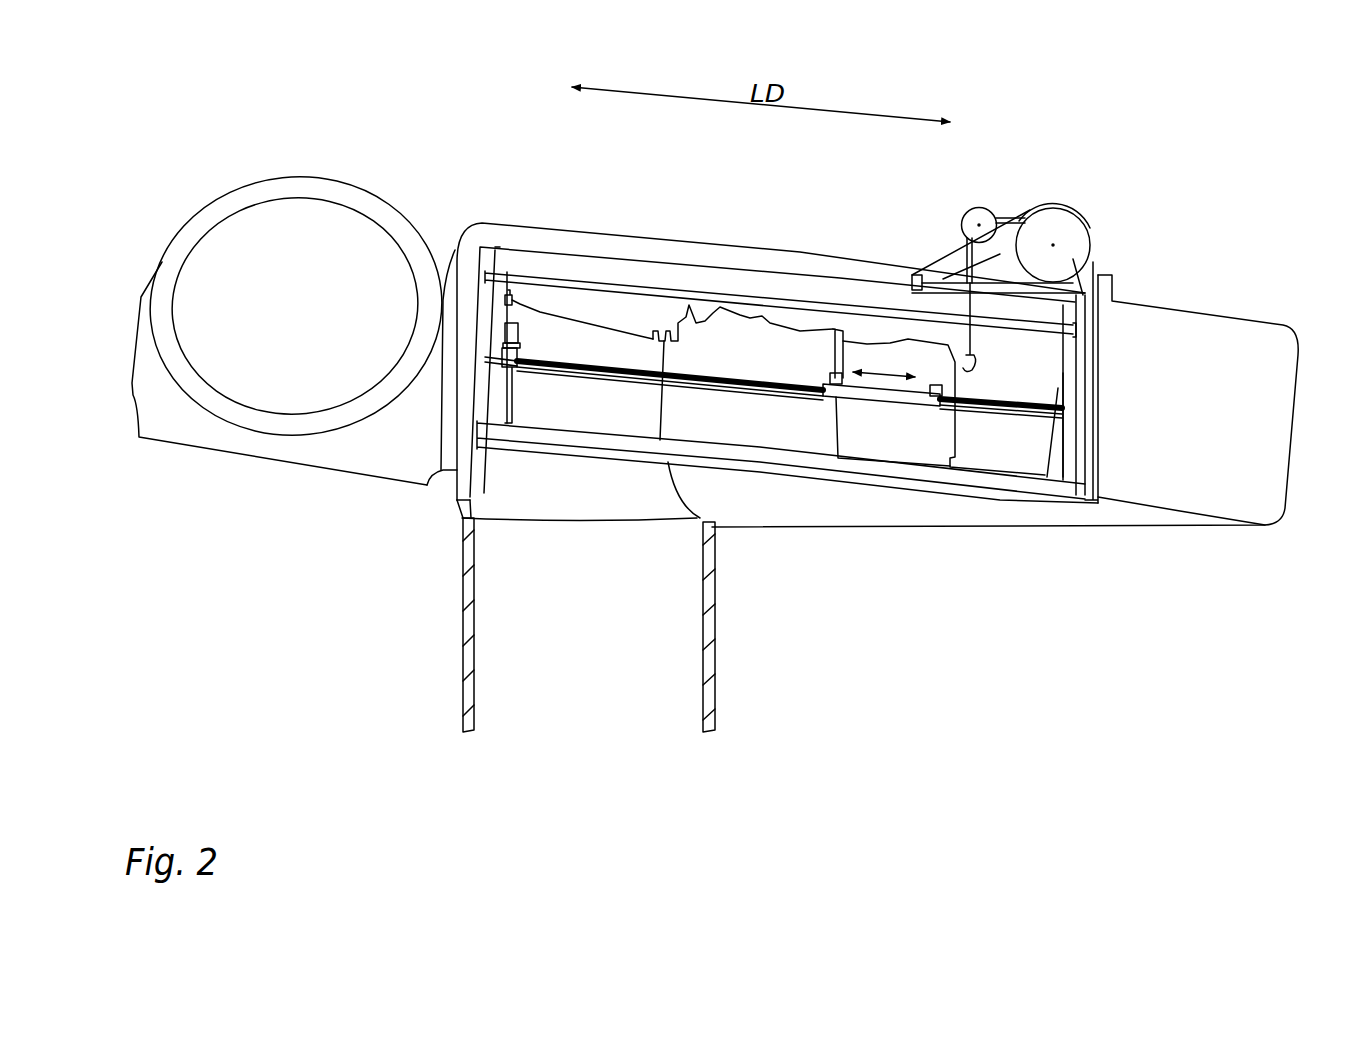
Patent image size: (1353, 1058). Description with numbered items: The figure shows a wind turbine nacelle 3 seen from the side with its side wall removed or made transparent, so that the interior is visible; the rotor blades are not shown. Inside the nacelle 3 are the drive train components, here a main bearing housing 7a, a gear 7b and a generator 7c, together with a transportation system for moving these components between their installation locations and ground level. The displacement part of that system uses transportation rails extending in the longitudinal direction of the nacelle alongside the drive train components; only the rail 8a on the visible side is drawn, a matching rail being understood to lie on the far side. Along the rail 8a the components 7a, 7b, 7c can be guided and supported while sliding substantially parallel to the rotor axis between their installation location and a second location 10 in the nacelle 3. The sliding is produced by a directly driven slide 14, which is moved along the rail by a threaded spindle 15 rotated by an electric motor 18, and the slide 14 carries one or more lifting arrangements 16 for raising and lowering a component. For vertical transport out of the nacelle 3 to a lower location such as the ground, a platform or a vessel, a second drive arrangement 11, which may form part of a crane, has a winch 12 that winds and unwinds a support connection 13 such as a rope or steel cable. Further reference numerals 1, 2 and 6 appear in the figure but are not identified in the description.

The wind turbine 1 is at (222, 634).
The tower 2 is at (720, 628).
The nacelle 3 is at (758, 205).
The hub 6 is at (212, 190).
The main bearing housing 7a is at (550, 333).
The gear 7b is at (717, 320).
The generator 7c is at (905, 352).
The transportation rail 8a is at (628, 382).
The second location 10 is at (983, 382).
The second drive arrangement 11 is at (1108, 196).
The winch 12 is at (1086, 227).
The support connection 13 is at (962, 243).
The slide 14 is at (872, 393).
The threaded spindle 15 is at (537, 322).
The lifting arrangement 16 is at (830, 378).
The electric motor 18 is at (510, 345).